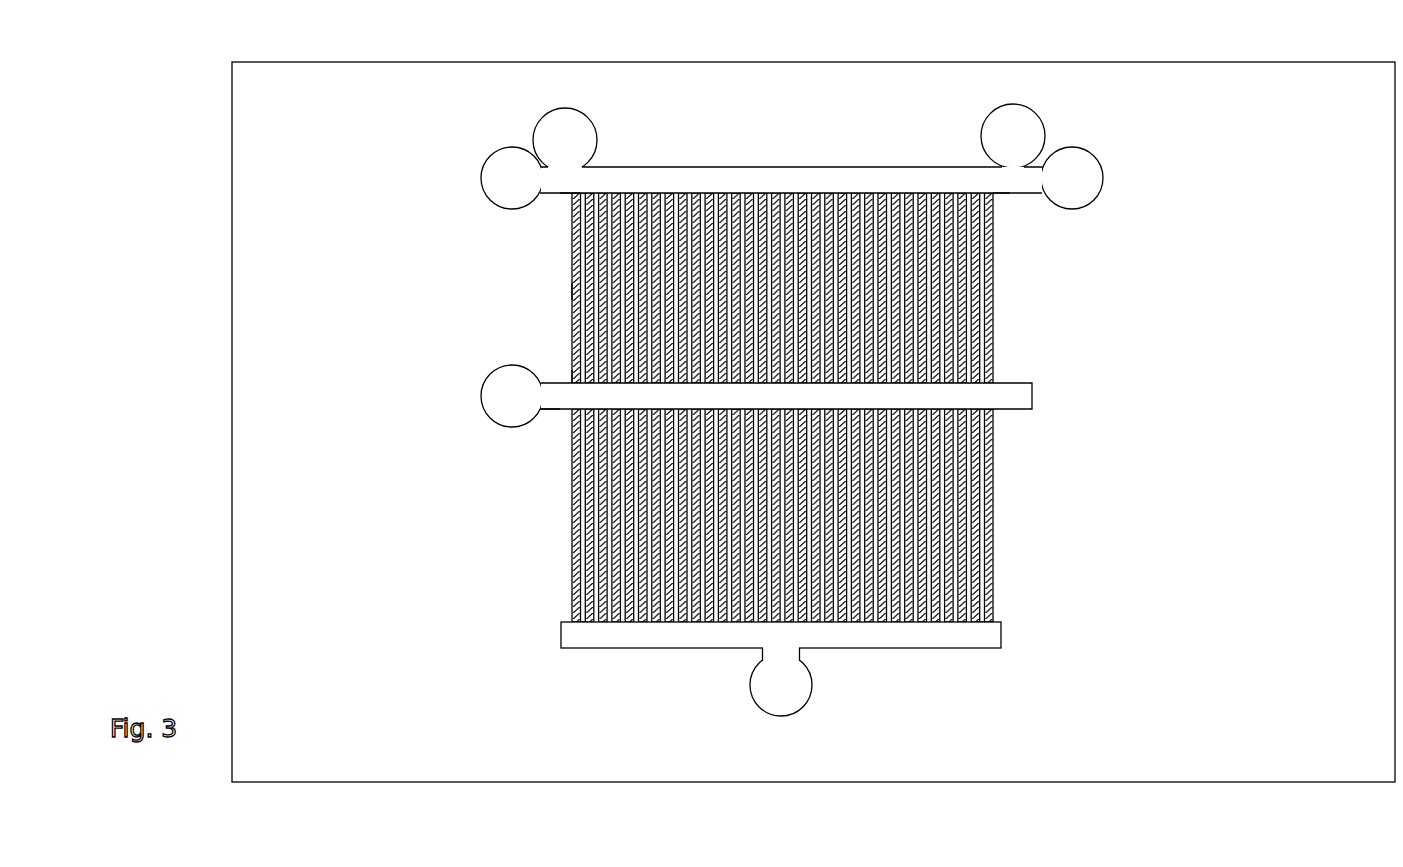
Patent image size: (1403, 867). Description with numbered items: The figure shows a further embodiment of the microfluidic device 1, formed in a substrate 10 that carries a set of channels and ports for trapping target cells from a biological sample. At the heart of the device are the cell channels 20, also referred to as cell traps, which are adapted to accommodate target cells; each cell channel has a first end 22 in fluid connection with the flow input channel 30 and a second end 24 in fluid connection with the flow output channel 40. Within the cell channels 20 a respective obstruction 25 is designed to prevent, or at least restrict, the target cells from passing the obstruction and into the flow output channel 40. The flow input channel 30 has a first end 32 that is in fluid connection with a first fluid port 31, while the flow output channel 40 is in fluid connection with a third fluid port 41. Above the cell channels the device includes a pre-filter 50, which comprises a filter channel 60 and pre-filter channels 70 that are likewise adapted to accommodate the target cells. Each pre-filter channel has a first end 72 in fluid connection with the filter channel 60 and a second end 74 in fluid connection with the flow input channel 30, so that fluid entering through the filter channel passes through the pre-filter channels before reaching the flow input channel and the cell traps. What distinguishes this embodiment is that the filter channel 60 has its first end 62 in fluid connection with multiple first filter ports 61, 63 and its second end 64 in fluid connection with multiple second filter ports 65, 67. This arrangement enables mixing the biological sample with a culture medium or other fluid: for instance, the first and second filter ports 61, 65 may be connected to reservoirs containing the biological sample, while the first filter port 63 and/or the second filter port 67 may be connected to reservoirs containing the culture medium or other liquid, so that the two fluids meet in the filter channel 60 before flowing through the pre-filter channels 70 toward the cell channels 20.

The microfluidic device 1 is at (173, 132).
The substrate 10 is at (233, 308).
The cell channels 20 is at (997, 507).
The first end of cell channels 22 is at (995, 410).
The second end of cell channels 24 is at (993, 616).
The obstruction 25 is at (574, 607).
The flow input channel 30 is at (741, 405).
The first fluid port 31 is at (484, 383).
The first end of flow input channel 32 is at (550, 414).
The flow output channel 40 is at (781, 682).
The third fluid port 41 is at (752, 699).
The pre-filter 50 is at (813, 166).
The filter channel 60 is at (750, 166).
The first filter port 61 is at (483, 167).
The first end of filter channel 62 is at (574, 180).
The first filter port 63 is at (537, 124).
The second end of filter channel 64 is at (1005, 197).
The second filter port 65 is at (1099, 163).
The second filter port 67 is at (1042, 120).
The pre-filter channels 70 is at (572, 291).
The first end of pre-filter channels 72 is at (573, 196).
The second end of pre-filter channels 74 is at (572, 380).